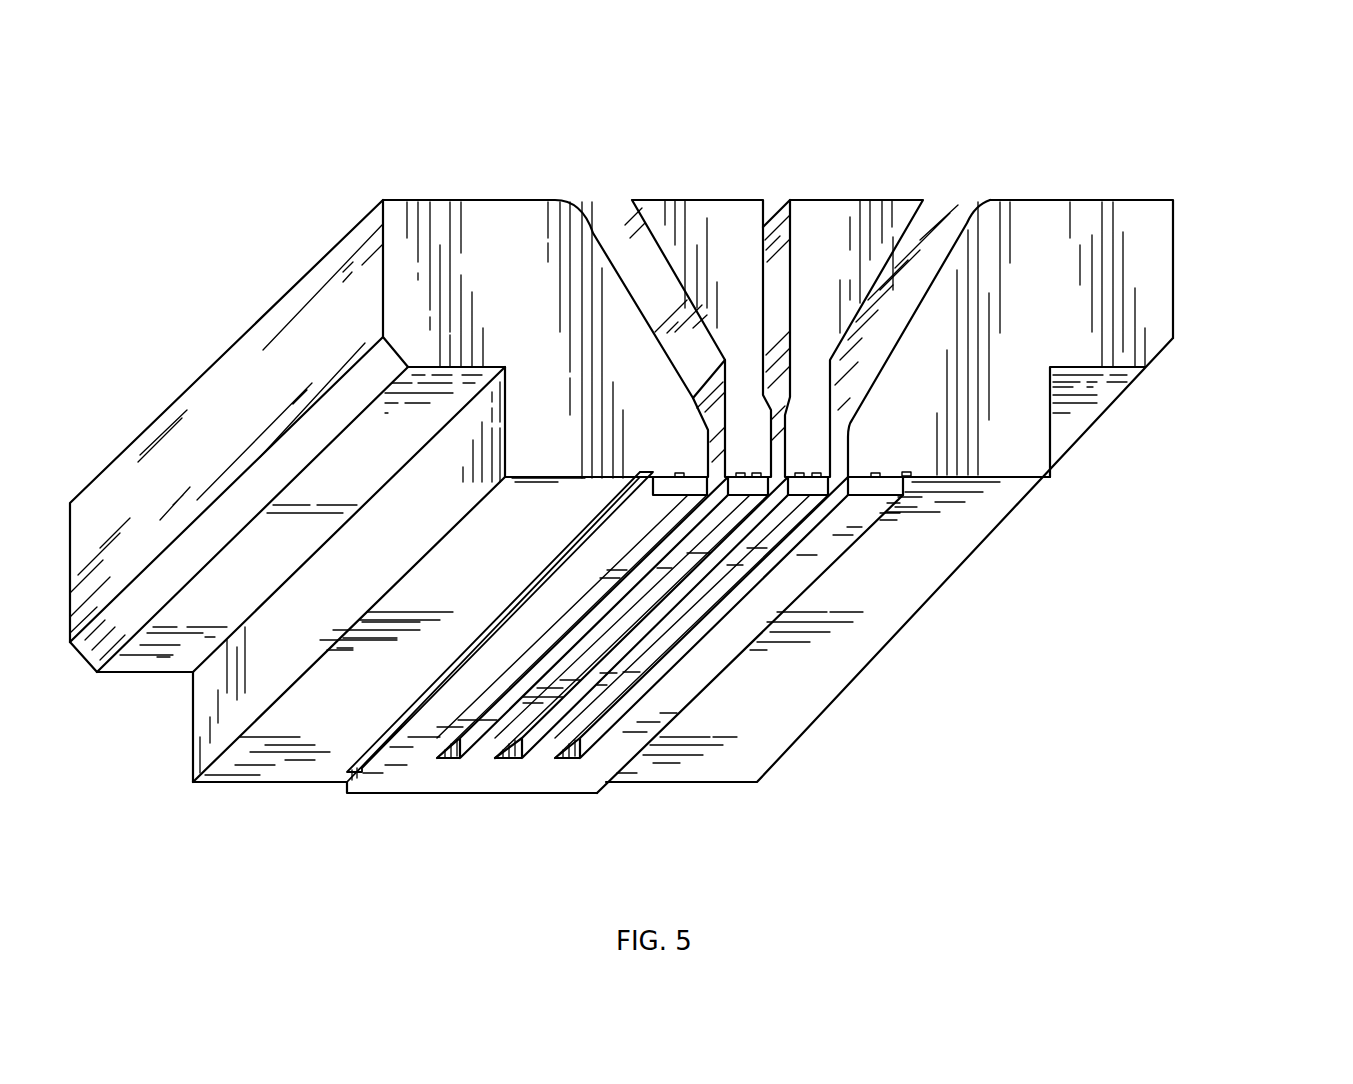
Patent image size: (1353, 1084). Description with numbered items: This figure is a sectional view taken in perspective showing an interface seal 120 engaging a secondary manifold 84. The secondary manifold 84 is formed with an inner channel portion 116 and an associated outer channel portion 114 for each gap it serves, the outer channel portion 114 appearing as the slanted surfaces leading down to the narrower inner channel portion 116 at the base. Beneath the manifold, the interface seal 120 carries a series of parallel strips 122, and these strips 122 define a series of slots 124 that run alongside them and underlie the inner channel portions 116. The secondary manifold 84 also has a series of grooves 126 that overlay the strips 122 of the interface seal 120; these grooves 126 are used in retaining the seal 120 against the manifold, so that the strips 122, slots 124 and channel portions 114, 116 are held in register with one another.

The secondary manifold 84 is at (1148, 221).
The outer channel portion 114 is at (642, 267).
The inner channel portion 116 is at (847, 455).
The interface seal 120 is at (560, 778).
The parallel strips 122 is at (703, 667).
The slots 124 is at (832, 500).
The grooves 126 is at (680, 472).